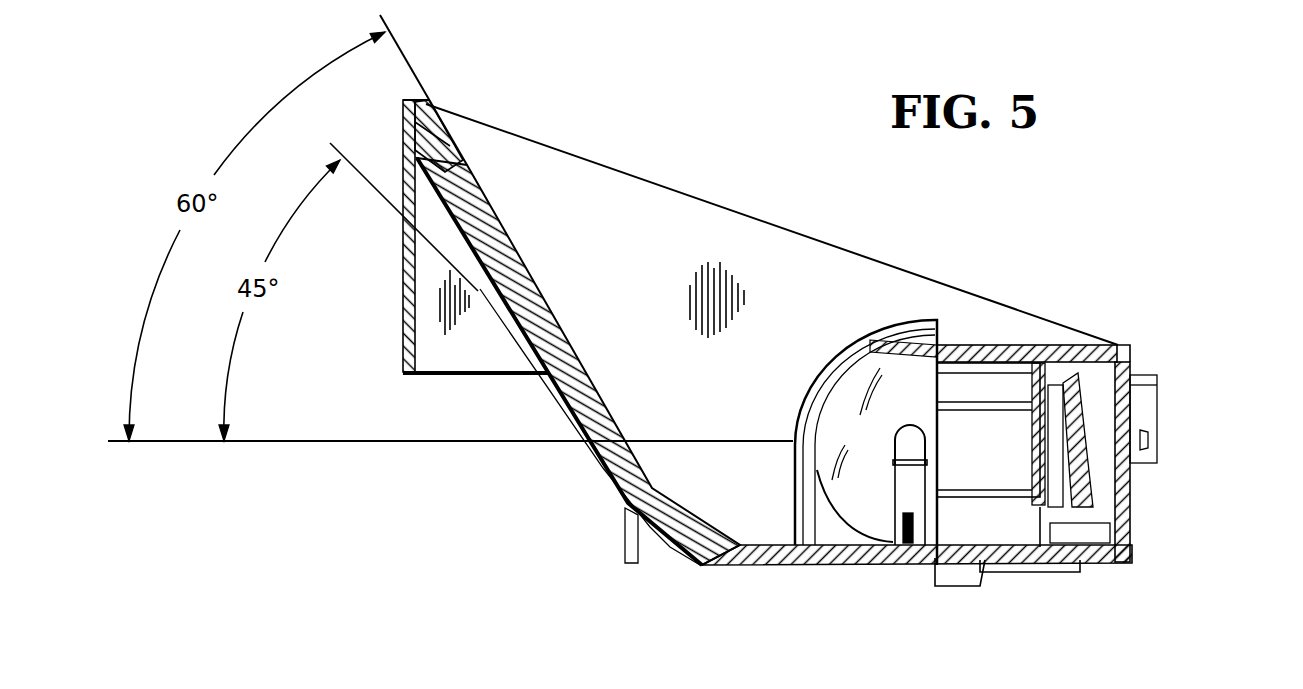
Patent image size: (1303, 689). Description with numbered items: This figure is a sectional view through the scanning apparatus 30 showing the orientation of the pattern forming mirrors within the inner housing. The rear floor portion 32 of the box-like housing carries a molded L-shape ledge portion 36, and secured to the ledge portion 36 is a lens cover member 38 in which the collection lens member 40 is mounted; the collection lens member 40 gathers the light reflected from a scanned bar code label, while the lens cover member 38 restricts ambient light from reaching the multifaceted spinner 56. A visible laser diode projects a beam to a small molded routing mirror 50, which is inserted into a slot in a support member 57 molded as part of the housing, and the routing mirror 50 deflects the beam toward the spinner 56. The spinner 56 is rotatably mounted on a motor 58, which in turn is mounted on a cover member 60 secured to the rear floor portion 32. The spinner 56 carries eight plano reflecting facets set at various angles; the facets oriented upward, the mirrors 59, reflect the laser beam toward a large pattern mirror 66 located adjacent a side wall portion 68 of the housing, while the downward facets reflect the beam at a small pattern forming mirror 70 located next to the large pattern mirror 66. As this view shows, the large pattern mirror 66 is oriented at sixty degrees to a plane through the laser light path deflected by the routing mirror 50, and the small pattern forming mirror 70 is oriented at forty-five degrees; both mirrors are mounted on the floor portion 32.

The scanning apparatus 30 is at (880, 439).
The rear floor portion 32 is at (603, 468).
The ledge portion 36 is at (678, 441).
The lens cover member 38 is at (877, 333).
The collection lens member 40 is at (838, 350).
The routing mirror 50 is at (905, 443).
The multifaceted spinner 56 is at (1080, 430).
The support member 57 is at (892, 508).
The motor 58 is at (1010, 476).
The upwardly oriented reflecting mirrors 59 is at (1117, 353).
The cover member 60 is at (1075, 563).
The large pattern mirror 66 is at (522, 264).
The side wall portion 68 is at (403, 283).
The small pattern forming mirror 70 is at (694, 503).